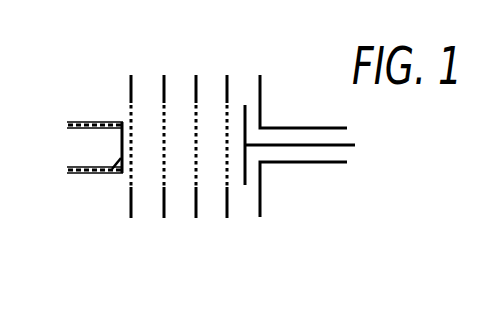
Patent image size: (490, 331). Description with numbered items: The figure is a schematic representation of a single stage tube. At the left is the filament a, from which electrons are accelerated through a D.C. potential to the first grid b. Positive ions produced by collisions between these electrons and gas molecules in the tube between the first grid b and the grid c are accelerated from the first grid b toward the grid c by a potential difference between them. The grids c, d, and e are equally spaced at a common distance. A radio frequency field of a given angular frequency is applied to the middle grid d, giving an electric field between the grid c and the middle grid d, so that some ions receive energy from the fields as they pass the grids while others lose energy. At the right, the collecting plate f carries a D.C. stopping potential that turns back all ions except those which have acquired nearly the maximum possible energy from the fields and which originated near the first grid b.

The filament a is at (113, 168).
The first grid b is at (131, 218).
The grid c is at (164, 218).
The middle grid d is at (196, 218).
The grid e is at (227, 218).
The collecting plate f is at (250, 175).